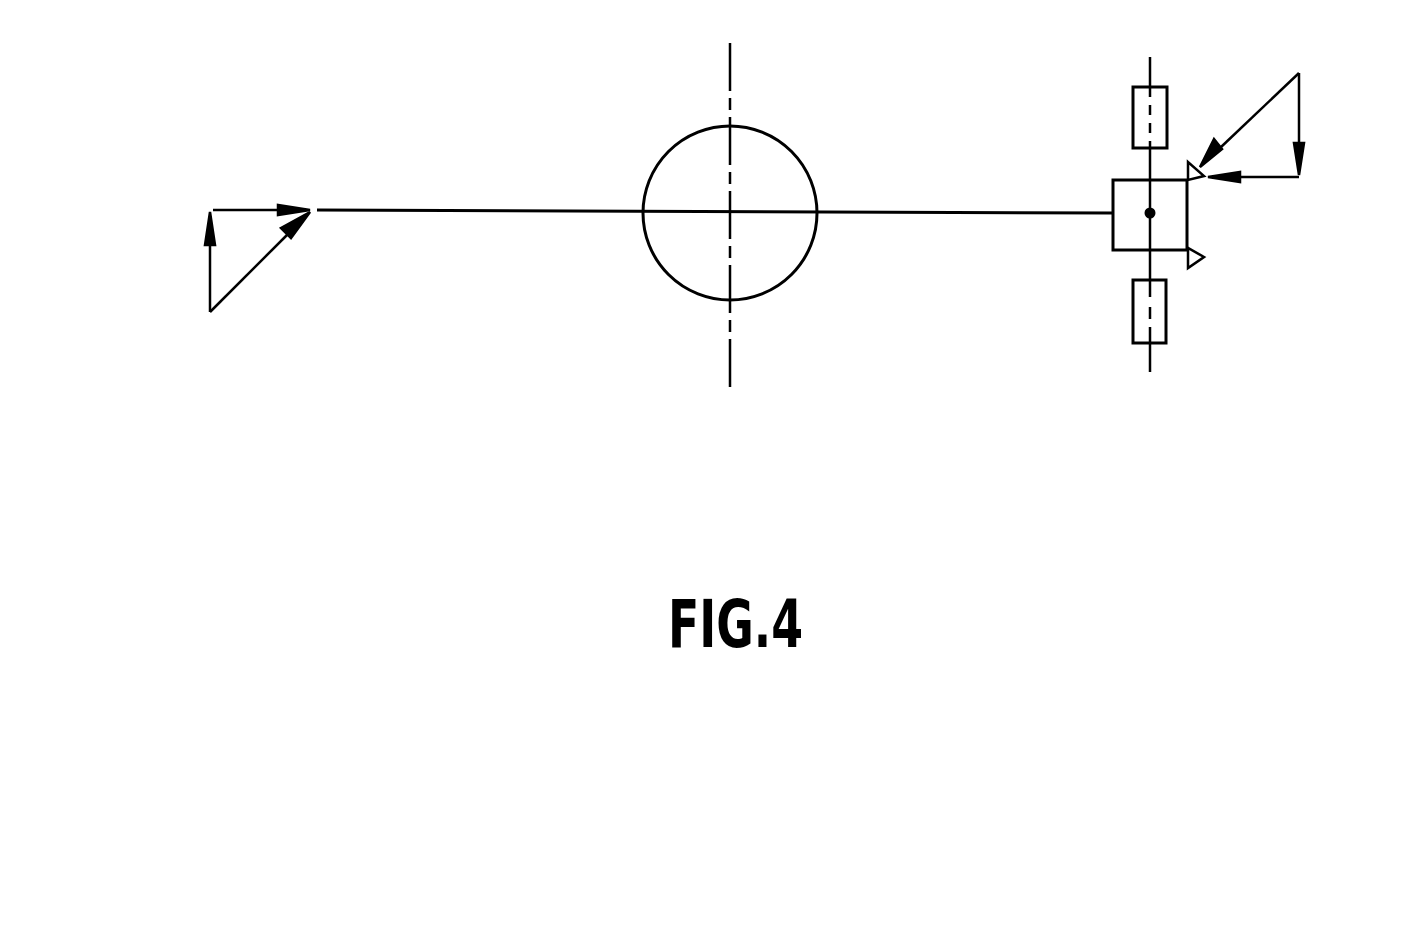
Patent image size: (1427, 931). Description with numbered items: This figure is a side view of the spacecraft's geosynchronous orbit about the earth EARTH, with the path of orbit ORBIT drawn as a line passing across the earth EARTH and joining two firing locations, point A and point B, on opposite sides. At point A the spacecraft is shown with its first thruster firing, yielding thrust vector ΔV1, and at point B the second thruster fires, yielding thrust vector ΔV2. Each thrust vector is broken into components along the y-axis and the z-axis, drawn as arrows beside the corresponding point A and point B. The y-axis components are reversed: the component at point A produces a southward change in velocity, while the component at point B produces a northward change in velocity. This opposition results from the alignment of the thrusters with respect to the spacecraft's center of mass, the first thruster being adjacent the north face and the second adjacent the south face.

The path of orbit ORBIT is at (582, 210).
The earth EARTH is at (780, 283).
The point A is at (1255, 200).
The point B is at (227, 290).